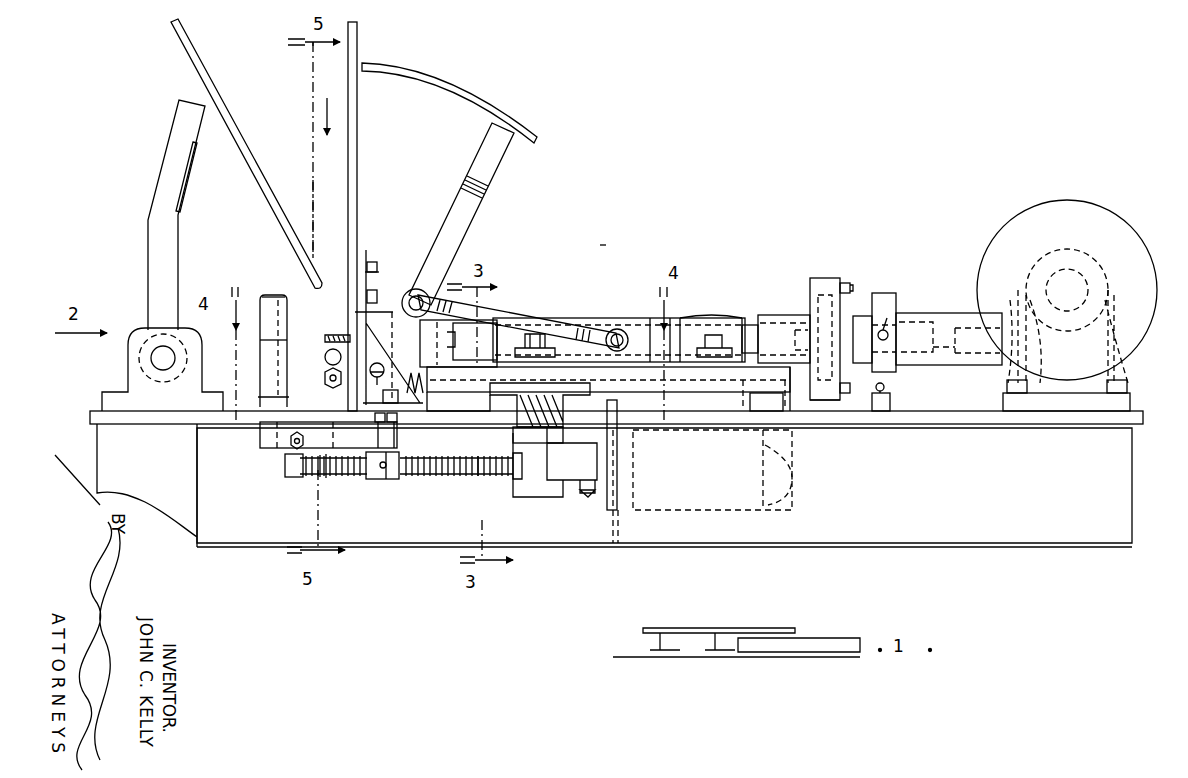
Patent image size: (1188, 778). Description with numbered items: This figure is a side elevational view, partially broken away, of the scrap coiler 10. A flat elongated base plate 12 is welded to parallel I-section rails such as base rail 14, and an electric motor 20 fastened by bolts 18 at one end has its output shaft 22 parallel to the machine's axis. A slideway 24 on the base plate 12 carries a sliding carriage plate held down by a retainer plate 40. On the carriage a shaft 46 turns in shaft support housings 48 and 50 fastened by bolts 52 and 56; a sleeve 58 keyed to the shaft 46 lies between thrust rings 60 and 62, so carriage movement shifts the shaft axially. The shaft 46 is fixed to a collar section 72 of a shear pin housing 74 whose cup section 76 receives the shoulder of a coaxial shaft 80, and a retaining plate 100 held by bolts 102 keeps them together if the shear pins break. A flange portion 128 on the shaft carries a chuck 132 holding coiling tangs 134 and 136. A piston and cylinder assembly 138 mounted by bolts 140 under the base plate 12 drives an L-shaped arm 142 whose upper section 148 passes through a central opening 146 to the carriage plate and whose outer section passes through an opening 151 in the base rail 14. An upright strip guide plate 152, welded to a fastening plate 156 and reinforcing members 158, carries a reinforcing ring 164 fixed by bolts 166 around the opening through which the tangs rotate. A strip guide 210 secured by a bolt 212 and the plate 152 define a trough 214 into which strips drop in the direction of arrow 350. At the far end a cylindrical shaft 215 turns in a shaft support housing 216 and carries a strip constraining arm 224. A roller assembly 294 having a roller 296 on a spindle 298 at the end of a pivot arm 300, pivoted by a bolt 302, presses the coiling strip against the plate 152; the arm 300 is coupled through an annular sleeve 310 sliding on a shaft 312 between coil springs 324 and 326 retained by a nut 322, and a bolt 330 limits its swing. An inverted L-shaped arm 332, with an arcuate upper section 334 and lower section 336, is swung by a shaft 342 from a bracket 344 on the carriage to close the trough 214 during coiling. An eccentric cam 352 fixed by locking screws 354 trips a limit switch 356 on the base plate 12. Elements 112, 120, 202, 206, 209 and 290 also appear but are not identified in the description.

The scrap coiler 10 is at (605, 240).
The base plate 12 is at (956, 413).
The base rail 14 is at (1136, 478).
The bolts 18 is at (1107, 390).
The electric motor 20 is at (1107, 210).
The output shaft 22 is at (1068, 336).
The slideway 24 is at (792, 402).
The retainer plate 40 is at (752, 412).
The shaft 46 is at (538, 312).
The shaft support housing 48 is at (542, 352).
The shaft support housing 50 is at (715, 313).
The bolt 52 is at (578, 325).
The bolt 56 is at (723, 350).
The annular spacer or sleeve 58 is at (617, 316).
The thrust ring 60 is at (623, 342).
The thrust ring 62 is at (680, 313).
The collar section 72 is at (790, 312).
The shear pin housing 74 is at (825, 277).
The cup section 76 is at (835, 405).
The shaft 80 is at (850, 323).
The retaining plate 100 is at (842, 278).
The bolts 102 is at (849, 283).
The shaft housing 112 is at (962, 313).
The block 120 is at (371, 431).
The flange portion 128 is at (458, 343).
The chuck 132 is at (410, 290).
The tang 134 is at (380, 306).
The tang 136 is at (358, 399).
The piston and cylinder assembly 138 is at (800, 478).
The bolts 140 is at (620, 442).
The L-shaped arm 142 is at (513, 433).
The central opening 146 is at (765, 462).
The upper section 148 is at (610, 402).
The opening 151 is at (563, 495).
The strip guide plate 152 is at (362, 145).
The fastening plate 156 is at (456, 480).
The reinforcing member 158 is at (420, 397).
The reinforcing ring 164 is at (368, 258).
The bolts 166 is at (382, 288).
The pin 202 is at (317, 330).
The bracket 206 is at (340, 347).
The nut 209 is at (323, 380).
The strip guide 210 is at (218, 99).
The bolt 212 is at (263, 437).
The trough or opening 214 is at (330, 172).
The cylindrical shaft 215 is at (162, 372).
The shaft support housing 216 is at (128, 366).
The strip constraining arm 224 is at (148, 254).
The grip 290 is at (188, 151).
The roller assembly 294 is at (257, 293).
The roller 296 is at (258, 344).
The spindle 298 is at (193, 438).
The pivot arm 300 is at (298, 407).
The bolt 302 is at (333, 480).
The annular sleeve 310 is at (390, 483).
The shaft 312 is at (480, 481).
The nut 322 is at (292, 482).
The coil spring 324 is at (505, 481).
The coil spring 326 is at (323, 482).
The bolt 330 is at (292, 458).
The inverted L-shaped arm 332 is at (488, 193).
The arcuate upper section 334 is at (447, 88).
The lower section 336 is at (470, 217).
The shaft 342 is at (488, 307).
The bracket 344 is at (700, 365).
The arrow 350 is at (325, 110).
The eccentric cam 352 is at (890, 292).
The locking screws 354 is at (882, 320).
The limit switch 356 is at (893, 404).